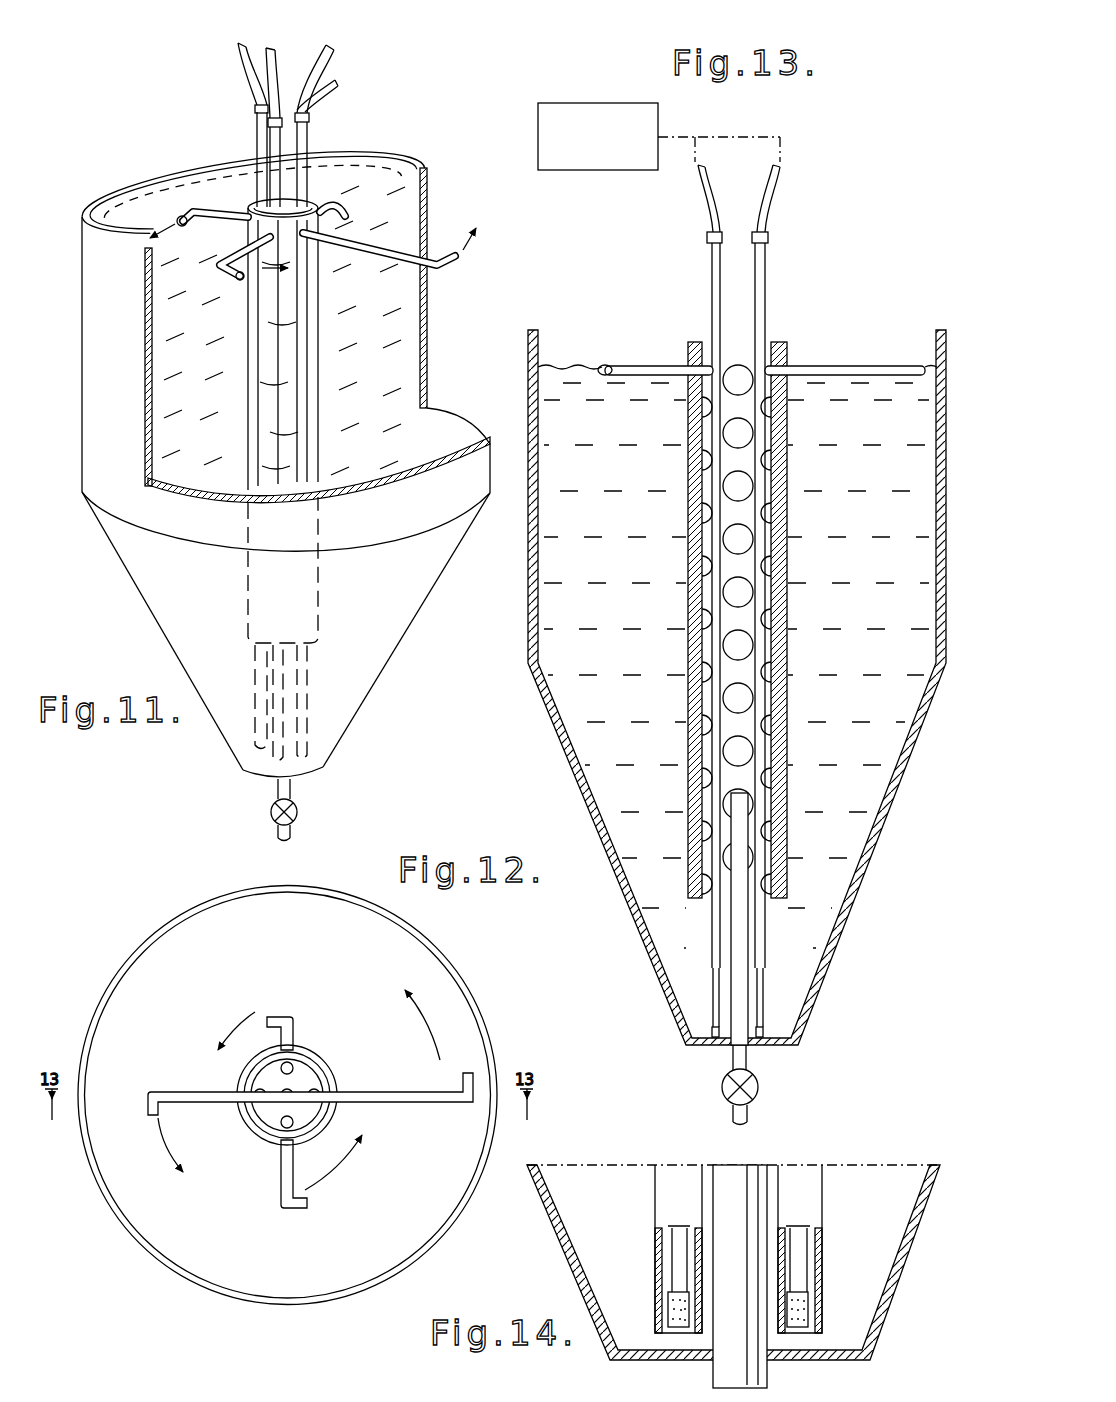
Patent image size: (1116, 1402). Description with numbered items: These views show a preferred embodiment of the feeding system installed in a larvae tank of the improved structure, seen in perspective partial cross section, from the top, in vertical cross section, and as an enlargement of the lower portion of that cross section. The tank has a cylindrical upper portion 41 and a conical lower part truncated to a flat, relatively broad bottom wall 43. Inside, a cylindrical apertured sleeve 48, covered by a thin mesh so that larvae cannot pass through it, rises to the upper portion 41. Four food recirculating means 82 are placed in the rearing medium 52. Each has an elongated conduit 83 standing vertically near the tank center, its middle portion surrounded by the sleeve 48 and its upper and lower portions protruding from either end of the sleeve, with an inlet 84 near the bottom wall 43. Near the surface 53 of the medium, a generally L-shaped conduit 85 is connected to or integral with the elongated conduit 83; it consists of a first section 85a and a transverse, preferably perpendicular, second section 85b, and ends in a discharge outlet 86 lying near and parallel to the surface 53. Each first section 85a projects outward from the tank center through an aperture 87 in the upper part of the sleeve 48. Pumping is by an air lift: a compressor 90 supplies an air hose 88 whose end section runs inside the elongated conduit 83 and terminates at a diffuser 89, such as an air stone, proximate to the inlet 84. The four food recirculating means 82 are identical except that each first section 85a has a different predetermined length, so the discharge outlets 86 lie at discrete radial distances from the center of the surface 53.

In FIG. 11, the upper portion 41 is at (82, 369).
In FIG. 13, the bottom wall 43 is at (692, 1046).
In FIG. 14, the bottom wall 43 is at (860, 1330).
In FIG. 13, the cylindrical apertured sleeve 48 is at (688, 466).
In FIG. 11, the rearing medium 52 is at (382, 301).
In FIG. 11, the surface of the medium 53 is at (363, 175).
In FIG. 13, the surface of the medium 53 is at (560, 365).
In FIG. 11, the food recirculating means 82 is at (318, 44).
In FIG. 11, the elongated conduit 83 is at (257, 134).
In FIG. 13, the elongated conduit 83 is at (711, 268).
In FIG. 14, the elongated conduit 83 is at (654, 1192).
In FIG. 13, the inlet 84 is at (707, 1046).
In FIG. 14, the inlet 84 is at (668, 1338).
In FIG. 11, the L-shaped conduit 85 is at (175, 205).
In FIG. 12, the first section 85a is at (187, 1090).
In FIG. 12, the second section 85b is at (148, 1104).
In FIG. 11, the discharge outlet 86 is at (183, 227).
In FIG. 13, the discharge outlet 86 is at (607, 378).
In FIG. 11, the aperture 87 is at (320, 229).
In FIG. 13, the aperture 87 is at (690, 352).
In FIG. 13, the air hose 88 is at (710, 203).
In FIG. 14, the air hose 88 is at (675, 1240).
In FIG. 13, the diffuser 89 is at (711, 1033).
In FIG. 14, the diffuser 89 is at (665, 1299).
In FIG. 13, the compressor 90 is at (573, 103).